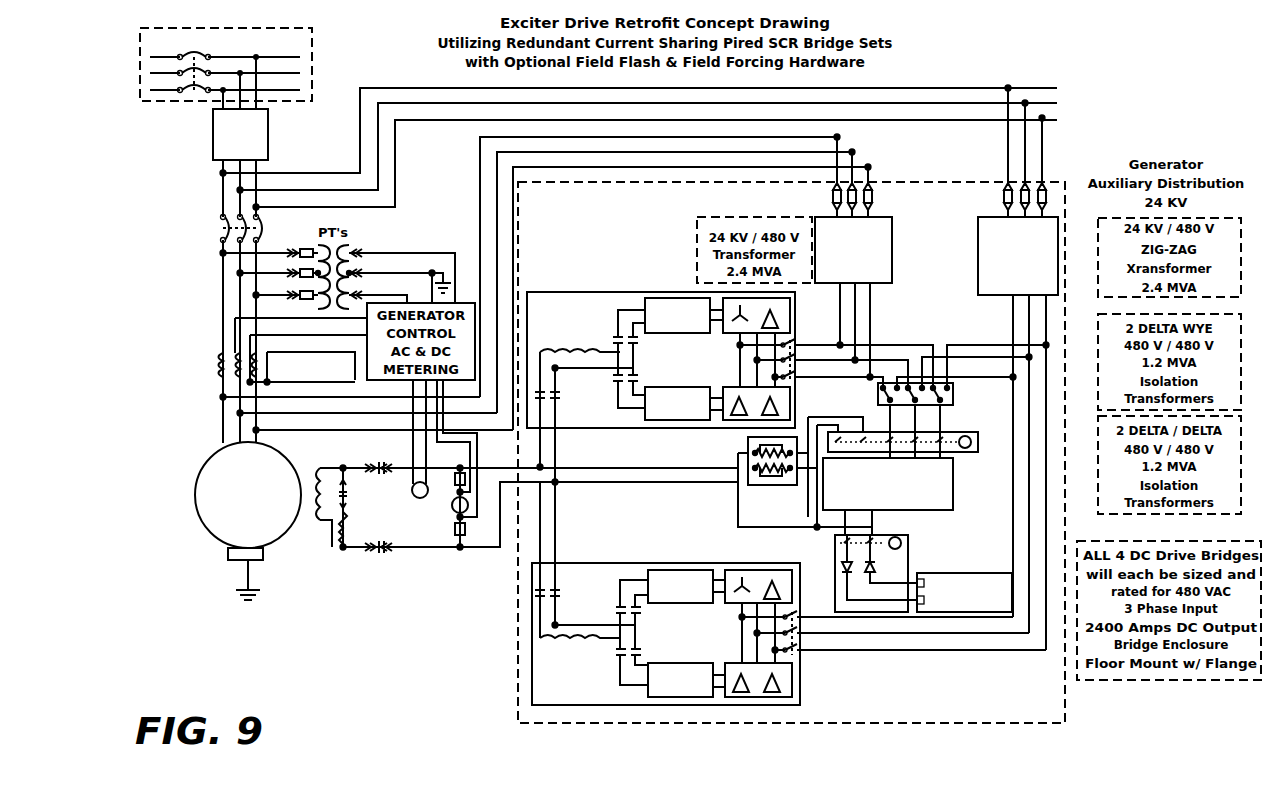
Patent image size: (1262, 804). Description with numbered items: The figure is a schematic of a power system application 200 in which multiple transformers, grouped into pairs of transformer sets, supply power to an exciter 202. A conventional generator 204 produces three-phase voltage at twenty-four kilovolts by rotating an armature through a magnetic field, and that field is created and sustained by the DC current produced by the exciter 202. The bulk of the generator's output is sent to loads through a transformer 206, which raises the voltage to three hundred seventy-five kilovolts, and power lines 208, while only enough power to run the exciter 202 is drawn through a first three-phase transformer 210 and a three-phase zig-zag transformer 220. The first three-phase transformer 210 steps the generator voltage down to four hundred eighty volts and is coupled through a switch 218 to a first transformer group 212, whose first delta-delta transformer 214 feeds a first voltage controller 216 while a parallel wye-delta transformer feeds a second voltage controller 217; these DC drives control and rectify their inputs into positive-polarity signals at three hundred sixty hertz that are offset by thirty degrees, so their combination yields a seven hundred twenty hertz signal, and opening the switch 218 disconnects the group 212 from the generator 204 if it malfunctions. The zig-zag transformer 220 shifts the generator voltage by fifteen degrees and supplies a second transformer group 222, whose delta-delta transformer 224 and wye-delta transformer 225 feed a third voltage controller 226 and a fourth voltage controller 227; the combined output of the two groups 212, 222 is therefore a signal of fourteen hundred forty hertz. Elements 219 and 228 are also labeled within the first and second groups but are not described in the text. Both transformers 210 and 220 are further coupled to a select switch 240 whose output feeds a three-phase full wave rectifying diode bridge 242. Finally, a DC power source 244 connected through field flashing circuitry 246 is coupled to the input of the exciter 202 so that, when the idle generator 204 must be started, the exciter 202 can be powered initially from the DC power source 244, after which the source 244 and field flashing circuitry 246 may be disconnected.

The power system application 200 is at (163, 597).
The exciter 202 is at (483, 548).
The generator 204 is at (196, 515).
The transformer 206 is at (213, 125).
The power lines 208 is at (312, 43).
The first 3-phase transformer 210 is at (892, 262).
The first transformer group 212 is at (681, 371).
The first delta-delta transformer 214 is at (738, 387).
The first voltage controller 216 is at (684, 387).
The second voltage controller 217 is at (655, 298).
The switch 218 is at (797, 382).
The 1A bridge 219 is at (790, 305).
The 3-phase zig-zag transformer 220 is at (978, 238).
The second transformer group 222 is at (685, 593).
The delta-delta transformer 224 is at (740, 663).
The wye-delta transformer 225 is at (755, 570).
The third voltage controller 226 is at (686, 663).
The fourth voltage controller 227 is at (677, 570).
The second set disconnect switch 228 is at (800, 655).
The select switch 240 is at (878, 392).
The 3-phase full wave rectifying diode bridge 242 is at (955, 510).
The DC power source 244 is at (962, 612).
The field flashing circuitry 246 is at (835, 560).